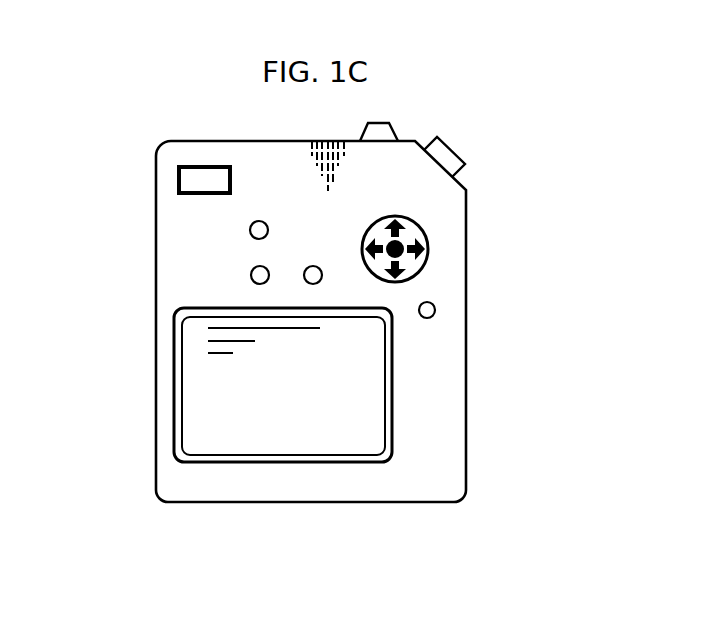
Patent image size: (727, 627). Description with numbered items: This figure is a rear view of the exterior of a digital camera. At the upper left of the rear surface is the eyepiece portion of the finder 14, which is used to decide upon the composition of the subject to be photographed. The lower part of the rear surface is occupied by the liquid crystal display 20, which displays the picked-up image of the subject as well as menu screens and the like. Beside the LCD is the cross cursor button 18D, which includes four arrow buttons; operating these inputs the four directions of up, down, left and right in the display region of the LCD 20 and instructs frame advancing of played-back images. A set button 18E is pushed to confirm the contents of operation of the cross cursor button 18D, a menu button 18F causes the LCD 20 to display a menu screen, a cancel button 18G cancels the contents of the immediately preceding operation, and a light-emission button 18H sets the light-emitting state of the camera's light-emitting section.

The finder 14 is at (190, 165).
The cross cursor button 18D is at (428, 250).
The set button 18E is at (251, 275).
The menu button 18F is at (250, 230).
The cancel button 18G is at (306, 281).
The light-emission button 18H is at (435, 312).
The liquid crystal display 20 is at (225, 440).